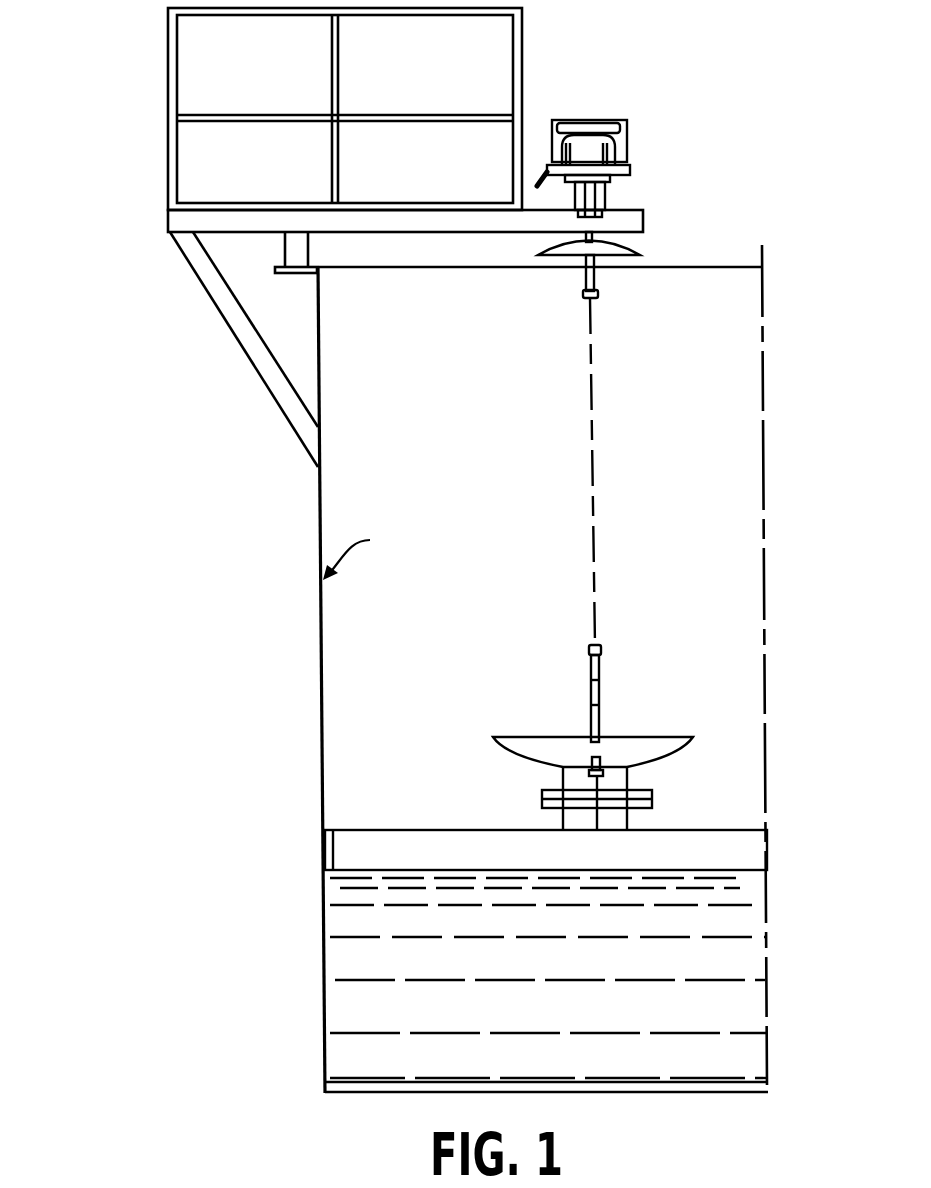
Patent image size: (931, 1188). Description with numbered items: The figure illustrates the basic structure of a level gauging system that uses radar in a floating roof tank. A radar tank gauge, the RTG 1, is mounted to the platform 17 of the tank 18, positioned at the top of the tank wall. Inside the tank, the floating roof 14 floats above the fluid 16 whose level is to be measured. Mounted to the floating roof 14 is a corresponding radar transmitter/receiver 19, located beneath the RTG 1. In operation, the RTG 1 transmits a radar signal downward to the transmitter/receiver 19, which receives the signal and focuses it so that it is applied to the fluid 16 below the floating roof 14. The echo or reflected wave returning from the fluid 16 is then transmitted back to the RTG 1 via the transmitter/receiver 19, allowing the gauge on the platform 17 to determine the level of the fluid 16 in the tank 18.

The RTG 1 is at (610, 190).
The floating roof 14 is at (740, 852).
The fluid 16 is at (733, 953).
The platform 17 is at (152, 241).
The tank 18 is at (289, 569).
The radar transmitter/receiver 19 is at (667, 692).